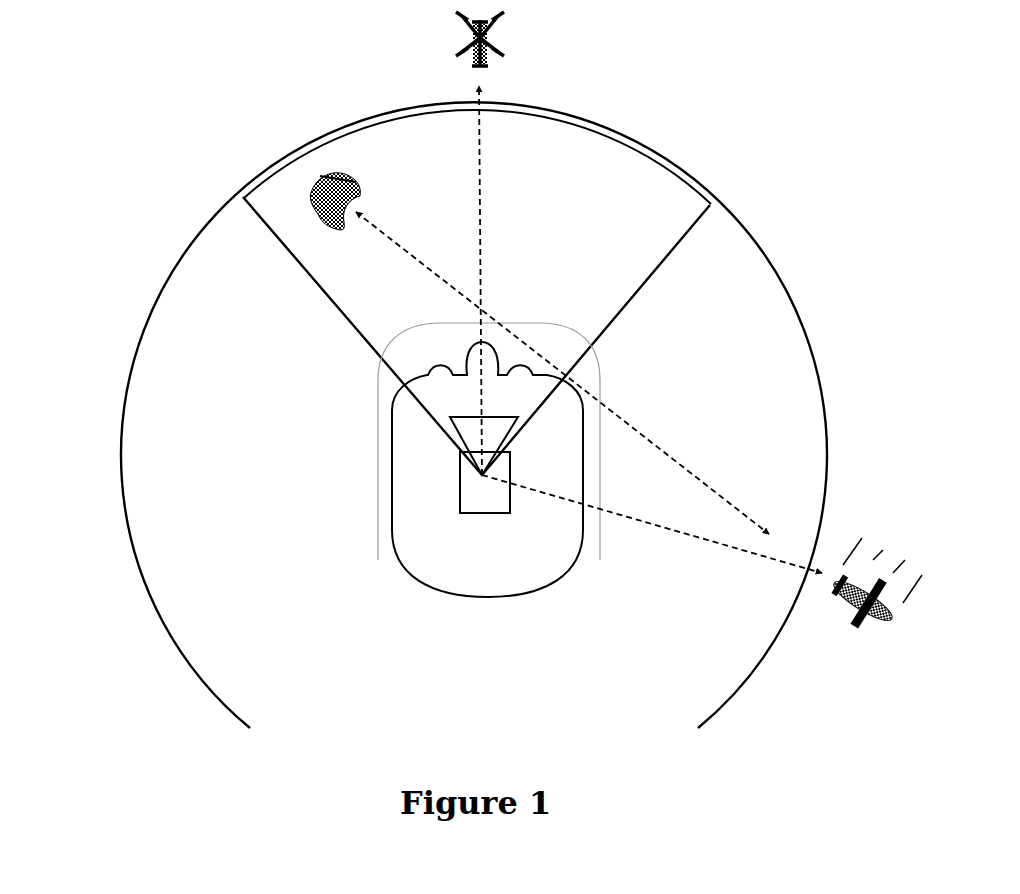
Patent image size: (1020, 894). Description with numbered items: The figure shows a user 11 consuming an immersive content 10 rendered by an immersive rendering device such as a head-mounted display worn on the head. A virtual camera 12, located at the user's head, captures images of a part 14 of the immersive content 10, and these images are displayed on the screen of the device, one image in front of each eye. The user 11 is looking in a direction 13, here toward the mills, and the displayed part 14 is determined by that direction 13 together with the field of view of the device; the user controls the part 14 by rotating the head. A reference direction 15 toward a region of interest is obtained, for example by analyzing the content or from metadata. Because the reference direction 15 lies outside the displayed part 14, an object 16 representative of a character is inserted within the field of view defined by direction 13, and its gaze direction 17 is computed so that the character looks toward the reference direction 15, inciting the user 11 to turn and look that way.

The immersive content 10 is at (154, 300).
The user 11 is at (388, 511).
The virtual camera 12 is at (459, 461).
The direction 13 is at (480, 164).
The part 14 is at (375, 128).
The reference direction 15 is at (730, 547).
The object 16 is at (315, 192).
The gaze direction 17 is at (732, 503).